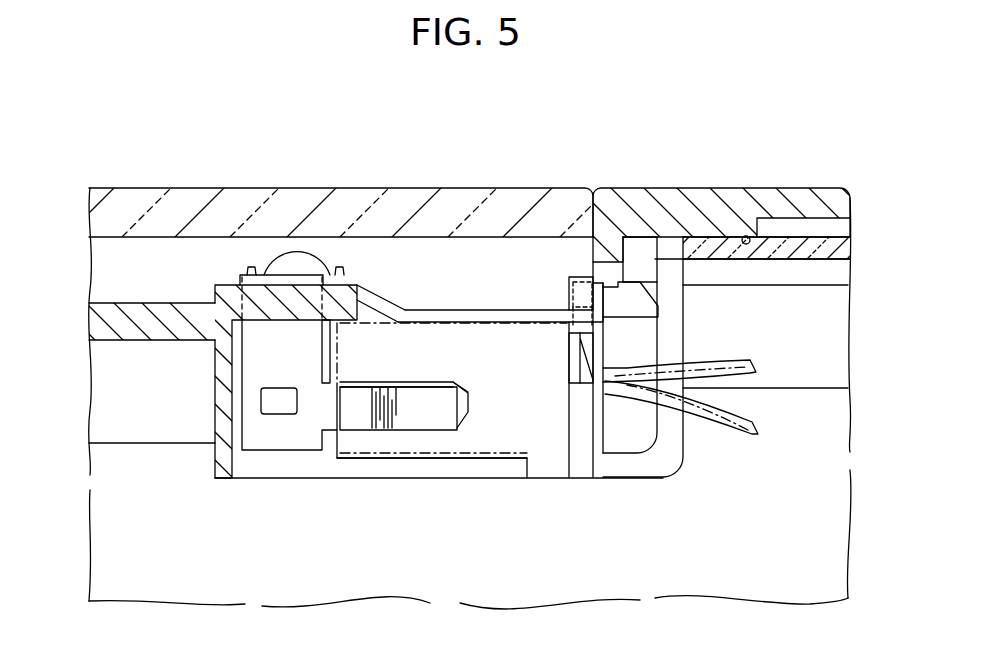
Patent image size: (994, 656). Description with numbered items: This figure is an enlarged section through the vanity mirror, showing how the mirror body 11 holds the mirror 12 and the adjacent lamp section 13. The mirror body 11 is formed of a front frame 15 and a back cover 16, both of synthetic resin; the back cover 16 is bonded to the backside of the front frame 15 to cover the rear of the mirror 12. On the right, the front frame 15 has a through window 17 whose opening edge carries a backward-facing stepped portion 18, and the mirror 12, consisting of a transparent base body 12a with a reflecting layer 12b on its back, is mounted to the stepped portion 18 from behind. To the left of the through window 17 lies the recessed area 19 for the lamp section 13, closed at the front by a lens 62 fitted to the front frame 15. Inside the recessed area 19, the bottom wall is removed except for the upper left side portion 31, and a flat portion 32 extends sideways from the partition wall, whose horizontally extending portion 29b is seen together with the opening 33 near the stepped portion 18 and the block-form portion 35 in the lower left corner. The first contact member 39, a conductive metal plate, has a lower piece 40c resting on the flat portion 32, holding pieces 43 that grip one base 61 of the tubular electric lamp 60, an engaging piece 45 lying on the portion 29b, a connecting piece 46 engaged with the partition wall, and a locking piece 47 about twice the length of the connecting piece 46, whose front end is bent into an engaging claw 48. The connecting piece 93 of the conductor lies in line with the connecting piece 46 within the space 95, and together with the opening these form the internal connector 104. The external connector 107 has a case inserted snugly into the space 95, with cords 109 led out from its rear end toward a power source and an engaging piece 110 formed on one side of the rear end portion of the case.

The mirror body 11 is at (702, 188).
The mirror 12 is at (828, 237).
The transparent base body 12a is at (849, 238).
The reflecting layer 12b is at (798, 260).
The lamp section 13 is at (257, 246).
The front frame 15 is at (668, 188).
The back cover 16 is at (664, 471).
The through window 17 is at (759, 228).
The stepped portion 18 is at (749, 236).
The recessed area 19 is at (592, 252).
The horizontally extending portion of the partition wall 29b is at (470, 459).
The upper left side portion 31 is at (437, 479).
The flat portion 32 is at (388, 311).
The opening 33 is at (610, 262).
The block-form portion 35 is at (88, 292).
The first contact member 39 is at (281, 277).
The lower piece 40c is at (239, 282).
The holding pieces 43 is at (246, 270).
The engaging piece 45 is at (589, 360).
The connecting piece 46 is at (441, 381).
The locking piece 47 is at (494, 311).
The engaging claw 48 is at (638, 296).
The electric lamp 60 is at (313, 262).
The base 61 is at (297, 253).
The lens 62 is at (413, 188).
The connecting piece 93 is at (449, 416).
The space 95 is at (374, 375).
The internal connector 104 is at (407, 479).
The external connector 107 is at (551, 458).
The cords 109 is at (748, 367).
The engaging piece 110 is at (576, 295).